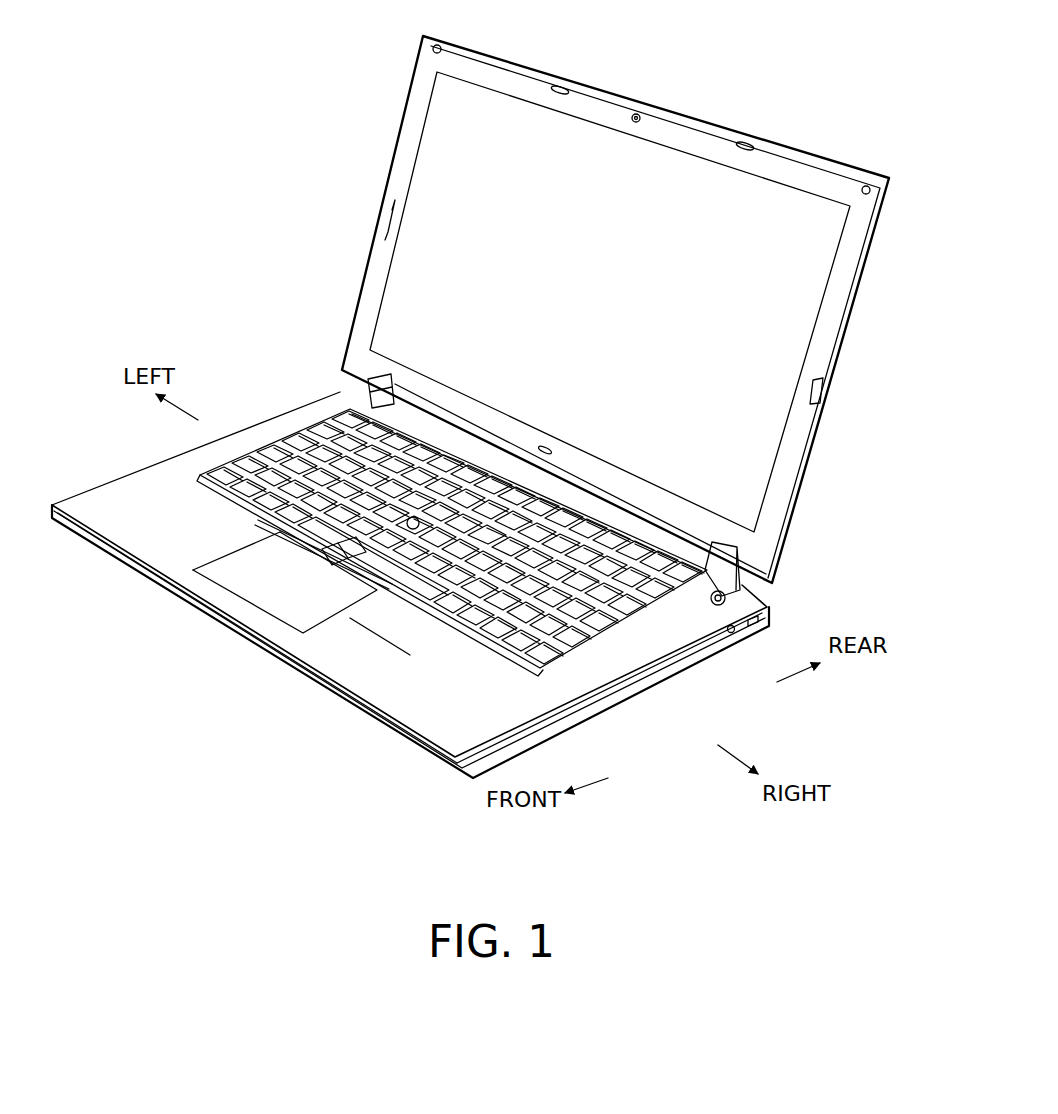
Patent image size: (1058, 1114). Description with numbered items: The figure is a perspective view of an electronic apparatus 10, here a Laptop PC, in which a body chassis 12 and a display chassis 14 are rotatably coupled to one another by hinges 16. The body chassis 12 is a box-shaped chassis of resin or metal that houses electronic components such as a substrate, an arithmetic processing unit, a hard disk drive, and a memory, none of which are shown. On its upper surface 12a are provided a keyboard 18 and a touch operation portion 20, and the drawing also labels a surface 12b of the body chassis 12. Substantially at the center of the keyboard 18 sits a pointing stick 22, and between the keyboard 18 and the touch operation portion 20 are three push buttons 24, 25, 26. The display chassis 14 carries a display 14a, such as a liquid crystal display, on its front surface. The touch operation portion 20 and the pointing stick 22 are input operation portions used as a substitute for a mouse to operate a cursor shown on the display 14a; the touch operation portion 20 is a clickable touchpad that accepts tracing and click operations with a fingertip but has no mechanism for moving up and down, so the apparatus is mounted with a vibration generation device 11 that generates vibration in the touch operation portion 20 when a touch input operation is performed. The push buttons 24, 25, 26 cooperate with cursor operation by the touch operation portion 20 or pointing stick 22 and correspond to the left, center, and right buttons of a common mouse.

The electronic apparatus 10 is at (215, 106).
The vibration generation device 11 is at (350, 625).
The body chassis 12 is at (126, 539).
The upper surface 12a is at (447, 713).
The upper surface 12b is at (217, 547).
The display chassis 14 is at (863, 301).
The display 14a is at (782, 350).
The hinges 16 is at (342, 386).
The keyboard 18 is at (290, 449).
The touch operation portion 20 is at (236, 597).
The pointing stick 22 is at (416, 518).
The push button 24 is at (237, 553).
The push button 25 is at (328, 557).
The push button 26 is at (373, 573).